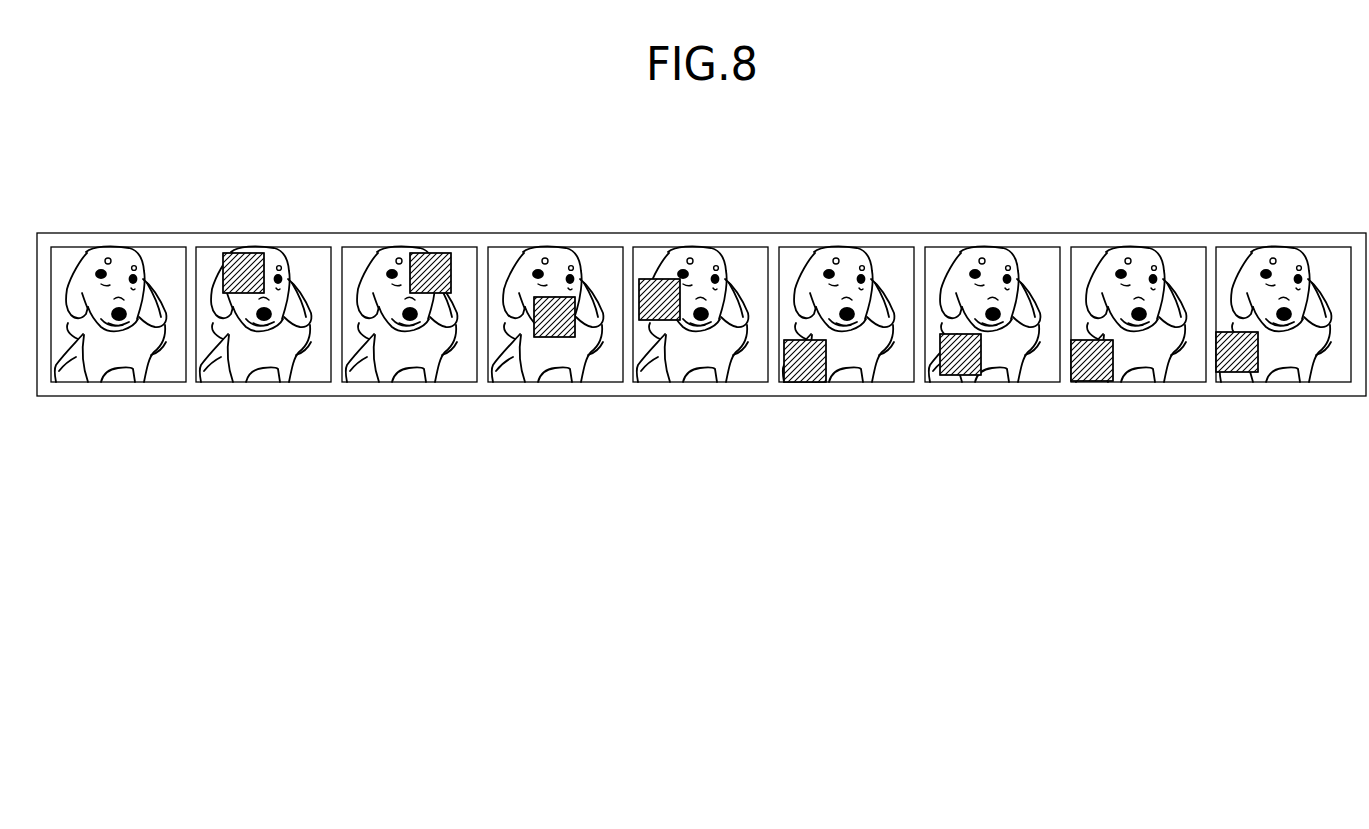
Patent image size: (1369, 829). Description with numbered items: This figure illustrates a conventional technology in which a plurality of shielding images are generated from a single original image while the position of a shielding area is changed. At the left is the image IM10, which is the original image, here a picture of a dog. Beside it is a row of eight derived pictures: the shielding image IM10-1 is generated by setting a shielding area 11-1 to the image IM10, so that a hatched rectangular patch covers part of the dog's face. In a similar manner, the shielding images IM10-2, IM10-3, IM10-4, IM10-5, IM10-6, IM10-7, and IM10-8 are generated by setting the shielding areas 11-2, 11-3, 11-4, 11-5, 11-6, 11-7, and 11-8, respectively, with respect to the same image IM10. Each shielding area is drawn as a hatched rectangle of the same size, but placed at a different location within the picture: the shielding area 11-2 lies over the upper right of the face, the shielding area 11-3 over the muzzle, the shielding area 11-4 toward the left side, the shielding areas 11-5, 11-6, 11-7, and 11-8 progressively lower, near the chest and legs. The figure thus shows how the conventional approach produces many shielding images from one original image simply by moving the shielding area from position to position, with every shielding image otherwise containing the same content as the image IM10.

The image IM10 is at (166, 247).
The shielding image IM10-1 is at (270, 258).
The shielding image IM10-2 is at (418, 258).
The shielding image IM10-3 is at (562, 313).
The shielding image IM10-4 is at (707, 258).
The shielding image IM10-5 is at (853, 313).
The shielding image IM10-6 is at (999, 313).
The shielding image IM10-7 is at (1143, 313).
The shielding image IM10-8 is at (1290, 313).
The shielding area 11-1 is at (247, 253).
The shielding area 11-2 is at (415, 253).
The shielding area 11-3 is at (555, 338).
The shielding area 11-4 is at (651, 279).
The shielding area 11-5 is at (803, 382).
The shielding area 11-6 is at (955, 375).
The shielding area 11-7 is at (1090, 381).
The shielding area 11-8 is at (1244, 372).